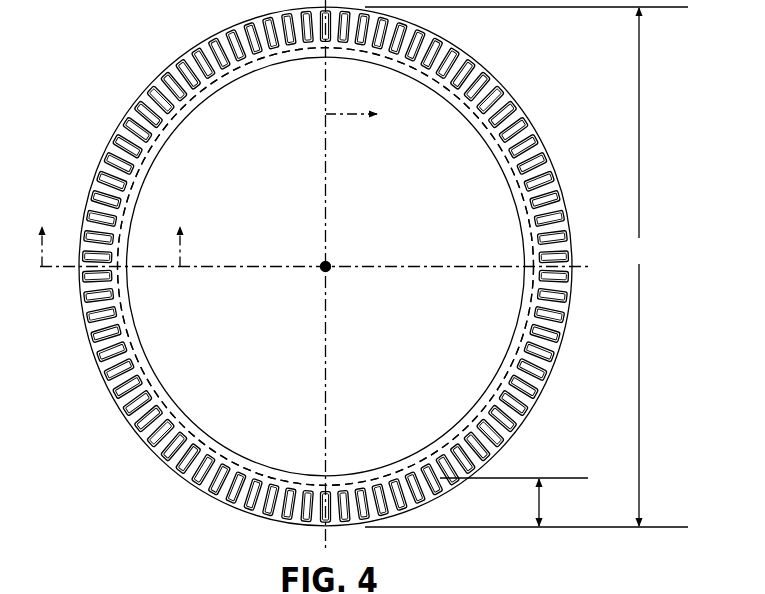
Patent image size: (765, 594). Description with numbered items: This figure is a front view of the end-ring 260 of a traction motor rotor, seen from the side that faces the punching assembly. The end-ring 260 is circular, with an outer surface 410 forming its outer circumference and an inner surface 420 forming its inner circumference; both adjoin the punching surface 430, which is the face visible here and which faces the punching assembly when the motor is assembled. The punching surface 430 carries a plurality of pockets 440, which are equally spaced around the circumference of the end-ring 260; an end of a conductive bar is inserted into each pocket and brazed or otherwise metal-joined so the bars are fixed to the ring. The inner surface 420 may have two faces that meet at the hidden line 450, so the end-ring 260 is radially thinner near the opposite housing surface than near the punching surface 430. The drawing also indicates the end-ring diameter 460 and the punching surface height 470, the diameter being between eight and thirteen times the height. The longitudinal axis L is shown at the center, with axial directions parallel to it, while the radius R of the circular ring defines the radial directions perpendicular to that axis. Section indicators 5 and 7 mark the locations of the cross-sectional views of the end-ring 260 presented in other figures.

The end-ring 260 is at (562, 112).
The outer surface 410 is at (146, 78).
The inner surface 420 is at (182, 130).
The punching surface 430 is at (233, 67).
The pockets 440 is at (235, 60).
The hidden line 450 is at (461, 99).
The end-ring diameter 460 is at (526, 267).
The punching surface height 470 is at (514, 502).
The section line for FIG. 5 is at (361, 115).
The section line for FIG. 7 is at (111, 228).
The longitudinal axis L is at (322, 263).
The radius R is at (403, 268).